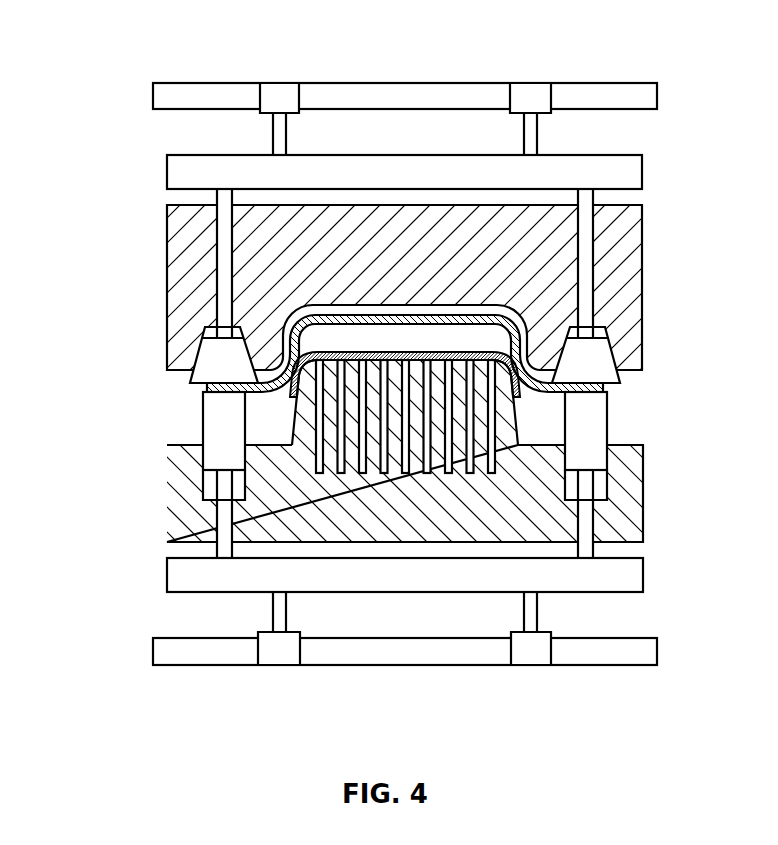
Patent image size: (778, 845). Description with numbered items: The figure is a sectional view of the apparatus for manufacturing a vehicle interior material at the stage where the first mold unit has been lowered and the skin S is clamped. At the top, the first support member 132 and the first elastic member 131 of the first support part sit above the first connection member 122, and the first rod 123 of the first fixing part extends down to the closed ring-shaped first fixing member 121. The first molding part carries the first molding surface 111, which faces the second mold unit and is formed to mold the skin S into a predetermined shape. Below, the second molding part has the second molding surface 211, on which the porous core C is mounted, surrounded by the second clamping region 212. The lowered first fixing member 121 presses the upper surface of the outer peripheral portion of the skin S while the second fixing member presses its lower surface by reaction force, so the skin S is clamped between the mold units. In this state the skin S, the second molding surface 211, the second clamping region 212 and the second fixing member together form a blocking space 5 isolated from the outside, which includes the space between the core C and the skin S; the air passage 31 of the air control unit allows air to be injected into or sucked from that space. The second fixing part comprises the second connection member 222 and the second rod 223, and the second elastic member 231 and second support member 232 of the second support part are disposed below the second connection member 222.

The first support member 132 is at (233, 90).
The first elastic member 131 is at (282, 133).
The first molding surface 111 is at (379, 312).
The second molding surface 211 is at (437, 352).
The first connection member 122 is at (173, 170).
The first rod 123 is at (222, 258).
The first fixing member 121 is at (210, 358).
The skin S is at (498, 308).
The core C is at (513, 349).
The blocking space 5 is at (538, 422).
The second clamping region 212 is at (188, 431).
The air passage 31 is at (340, 468).
The second rod 223 is at (223, 517).
The second connection member 222 is at (173, 575).
The second elastic member 231 is at (275, 613).
The second support member 232 is at (387, 655).